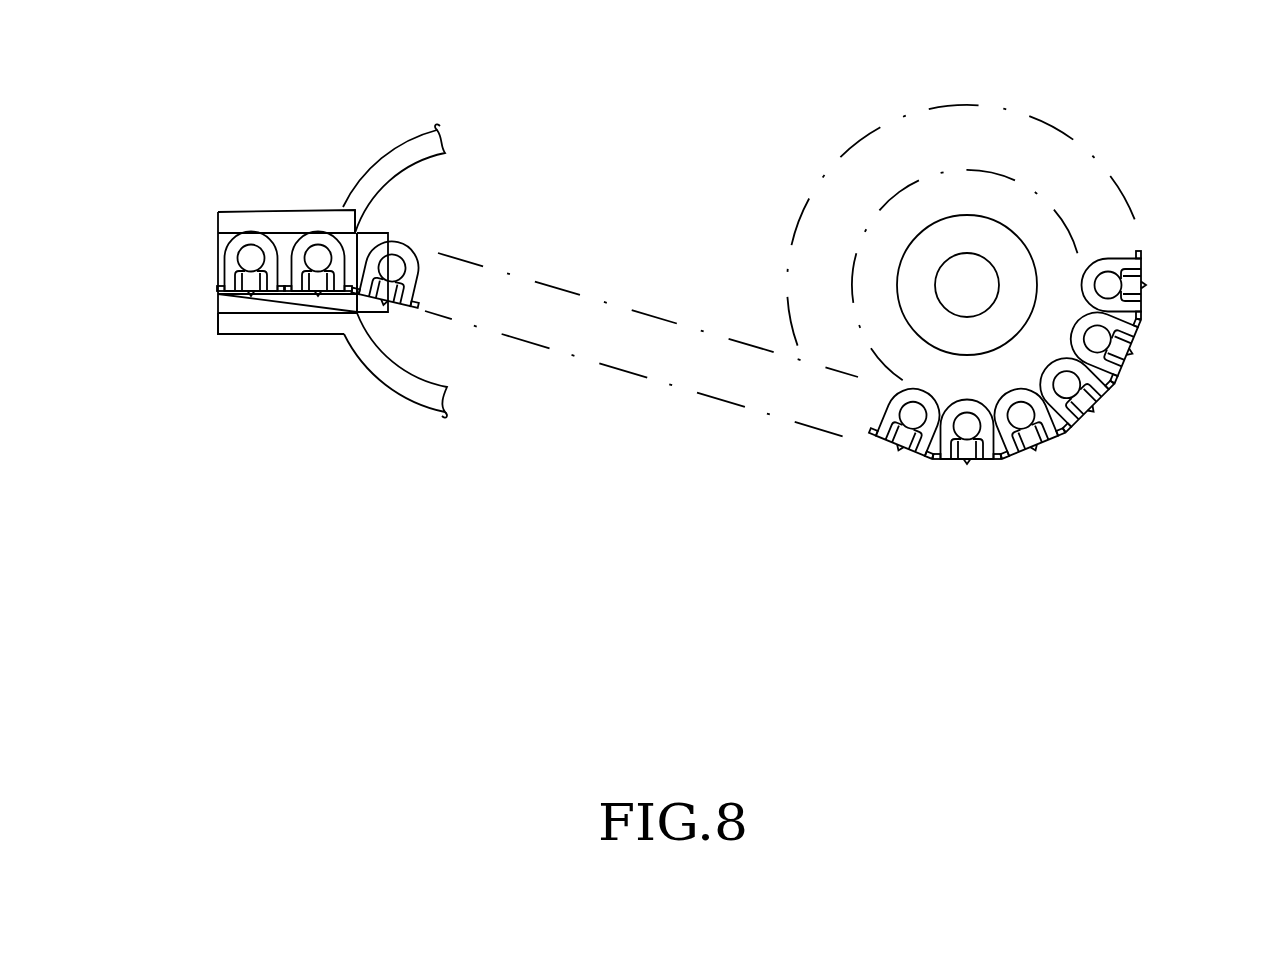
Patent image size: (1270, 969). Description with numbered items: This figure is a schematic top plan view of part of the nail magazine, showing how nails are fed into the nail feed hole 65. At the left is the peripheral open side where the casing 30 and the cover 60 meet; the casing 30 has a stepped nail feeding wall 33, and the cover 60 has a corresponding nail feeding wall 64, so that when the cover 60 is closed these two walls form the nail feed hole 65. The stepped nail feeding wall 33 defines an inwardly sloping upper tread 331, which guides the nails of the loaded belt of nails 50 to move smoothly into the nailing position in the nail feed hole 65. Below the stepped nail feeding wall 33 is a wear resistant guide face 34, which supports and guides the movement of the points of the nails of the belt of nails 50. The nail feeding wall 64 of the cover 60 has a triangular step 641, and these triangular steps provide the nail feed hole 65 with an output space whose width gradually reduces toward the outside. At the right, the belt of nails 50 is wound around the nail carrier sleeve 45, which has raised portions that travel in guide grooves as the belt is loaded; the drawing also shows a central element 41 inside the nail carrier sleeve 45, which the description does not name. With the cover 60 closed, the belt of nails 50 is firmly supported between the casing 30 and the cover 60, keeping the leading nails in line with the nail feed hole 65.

The casing 30 is at (408, 143).
The stepped nail feeding wall 33 is at (240, 217).
The inwardly sloping upper tread 331 is at (356, 233).
The wear resistant guide face 34 is at (380, 228).
The hub of wheel 41 is at (983, 280).
The nail carrier sleeve 45 is at (963, 228).
The belt of nails 50 is at (1168, 296).
The cover 60 is at (382, 372).
The nail feeding wall 64 is at (265, 330).
The triangular step 641 is at (220, 305).
The nail feed hole 65 is at (203, 230).